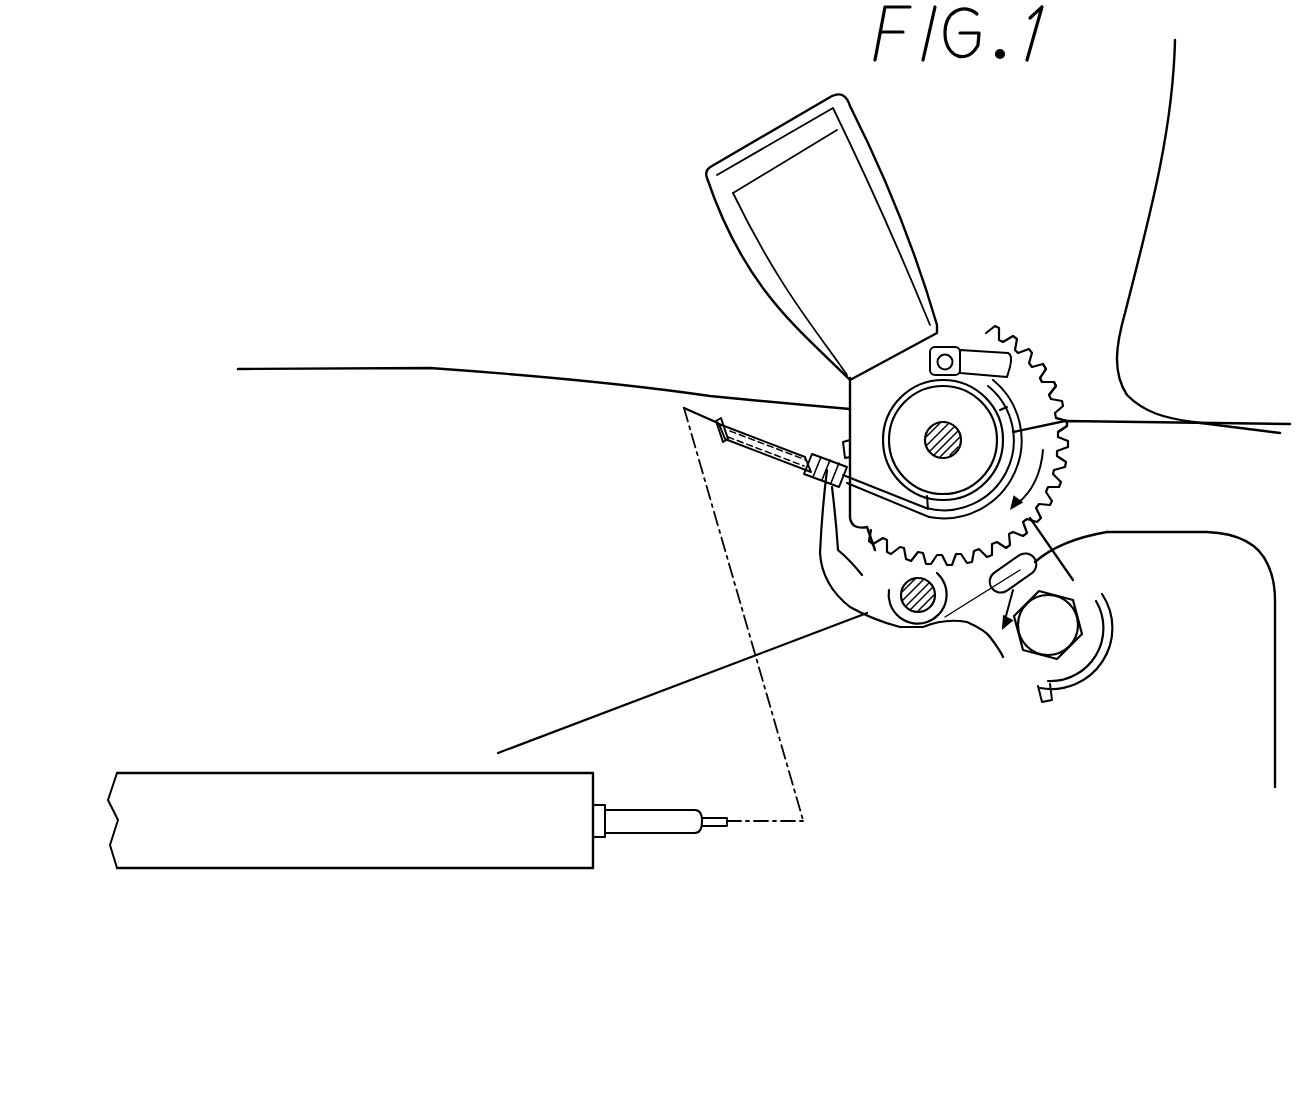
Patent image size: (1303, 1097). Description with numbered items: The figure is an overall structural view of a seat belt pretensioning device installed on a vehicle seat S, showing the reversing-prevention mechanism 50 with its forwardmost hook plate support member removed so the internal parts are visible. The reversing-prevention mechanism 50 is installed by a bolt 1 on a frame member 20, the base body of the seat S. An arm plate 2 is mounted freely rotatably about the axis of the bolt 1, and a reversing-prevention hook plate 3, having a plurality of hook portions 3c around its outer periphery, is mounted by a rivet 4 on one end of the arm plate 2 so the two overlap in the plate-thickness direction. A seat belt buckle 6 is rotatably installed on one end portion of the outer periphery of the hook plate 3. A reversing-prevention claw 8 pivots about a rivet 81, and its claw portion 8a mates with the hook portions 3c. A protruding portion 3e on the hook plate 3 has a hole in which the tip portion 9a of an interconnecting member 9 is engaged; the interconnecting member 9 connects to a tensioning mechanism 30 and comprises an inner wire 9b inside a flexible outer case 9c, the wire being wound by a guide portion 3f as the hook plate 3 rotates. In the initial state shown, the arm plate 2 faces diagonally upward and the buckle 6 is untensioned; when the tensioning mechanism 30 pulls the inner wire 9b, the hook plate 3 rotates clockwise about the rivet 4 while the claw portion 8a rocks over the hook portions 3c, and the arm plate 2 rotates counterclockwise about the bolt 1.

The bolt 1 is at (1063, 637).
The arm plate 2 is at (1075, 577).
The reversing-prevention hook plate 3 is at (992, 333).
The hook portions 3c is at (1053, 353).
The protruding portion 3e is at (945, 345).
The guide portion 3f is at (1057, 397).
The rivet 4 is at (925, 439).
The seat belt buckle 6 is at (742, 150).
The reversing-prevention claw 8 is at (888, 623).
The claw portion 8a is at (867, 617).
The interconnecting member 9 is at (788, 482).
The tip portion 9a is at (957, 347).
The inner wire 9b is at (805, 530).
The flexible outer case 9c is at (757, 457).
The frame member 20 is at (1233, 578).
The tensioning mechanism 30 is at (328, 773).
The reversing-prevention mechanism 50 is at (1068, 217).
The rivet 81 is at (938, 623).
The vehicle seat S is at (437, 368).